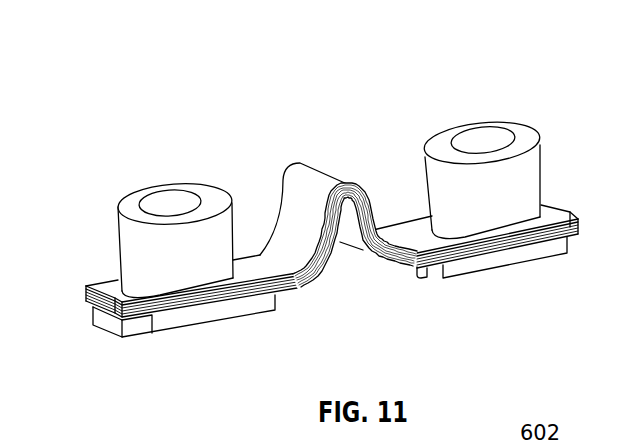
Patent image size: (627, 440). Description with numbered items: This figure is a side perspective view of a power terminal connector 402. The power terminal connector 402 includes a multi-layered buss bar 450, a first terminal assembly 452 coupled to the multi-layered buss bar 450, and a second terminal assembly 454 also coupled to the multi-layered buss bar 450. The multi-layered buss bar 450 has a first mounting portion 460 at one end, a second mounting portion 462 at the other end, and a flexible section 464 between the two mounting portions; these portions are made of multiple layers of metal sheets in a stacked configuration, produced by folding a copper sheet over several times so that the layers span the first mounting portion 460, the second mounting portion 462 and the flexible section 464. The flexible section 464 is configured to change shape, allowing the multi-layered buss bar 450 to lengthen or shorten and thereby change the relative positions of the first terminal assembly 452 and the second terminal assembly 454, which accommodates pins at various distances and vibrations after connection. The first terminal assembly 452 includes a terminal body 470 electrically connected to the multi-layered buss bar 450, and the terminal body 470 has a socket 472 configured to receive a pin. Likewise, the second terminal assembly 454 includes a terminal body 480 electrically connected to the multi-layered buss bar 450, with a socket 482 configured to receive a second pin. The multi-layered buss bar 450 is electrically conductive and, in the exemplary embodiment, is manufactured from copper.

The power terminal connector 402 is at (278, 75).
The multi-layered buss bar 450 is at (341, 225).
The first terminal assembly 452 is at (147, 216).
The second terminal assembly 454 is at (511, 144).
The first mounting portion 460 is at (307, 316).
The second mounting portion 462 is at (582, 262).
The flexible section 464 is at (423, 289).
The terminal body 470 is at (121, 221).
The socket 472 is at (181, 186).
The terminal body 480 is at (530, 152).
The socket 482 is at (497, 126).